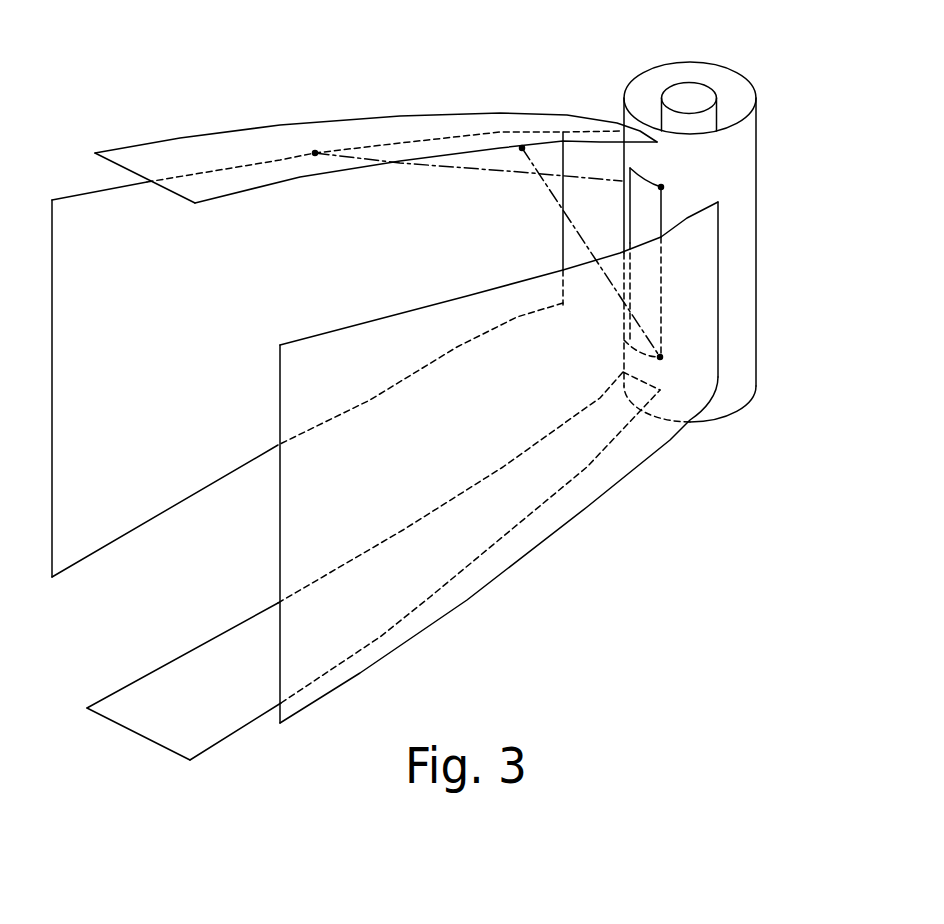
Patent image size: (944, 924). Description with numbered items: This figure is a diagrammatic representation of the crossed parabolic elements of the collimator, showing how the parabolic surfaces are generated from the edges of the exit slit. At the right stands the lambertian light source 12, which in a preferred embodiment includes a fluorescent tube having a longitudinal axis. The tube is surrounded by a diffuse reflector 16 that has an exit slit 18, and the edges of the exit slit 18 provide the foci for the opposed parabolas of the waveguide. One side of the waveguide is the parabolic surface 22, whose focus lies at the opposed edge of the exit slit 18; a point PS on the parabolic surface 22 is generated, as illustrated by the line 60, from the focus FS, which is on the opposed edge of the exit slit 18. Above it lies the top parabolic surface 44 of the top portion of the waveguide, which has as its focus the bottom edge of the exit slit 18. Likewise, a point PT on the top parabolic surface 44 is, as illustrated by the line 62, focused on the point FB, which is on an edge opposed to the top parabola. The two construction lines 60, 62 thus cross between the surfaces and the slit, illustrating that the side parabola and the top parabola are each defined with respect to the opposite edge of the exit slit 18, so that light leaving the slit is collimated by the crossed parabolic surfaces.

The lambertian light source 12 is at (687, 93).
The diffuse reflector 16 is at (752, 129).
The exit slit 18 is at (538, 442).
The parabolic surface 22 is at (368, 244).
The top parabolic surface 44 is at (378, 118).
The line 60 is at (474, 170).
The line 62 is at (552, 196).
The point on surface 22 PS is at (315, 153).
The point on top parabolic surface PT is at (522, 148).
The focus FS is at (681, 175).
The focus point FB is at (681, 350).